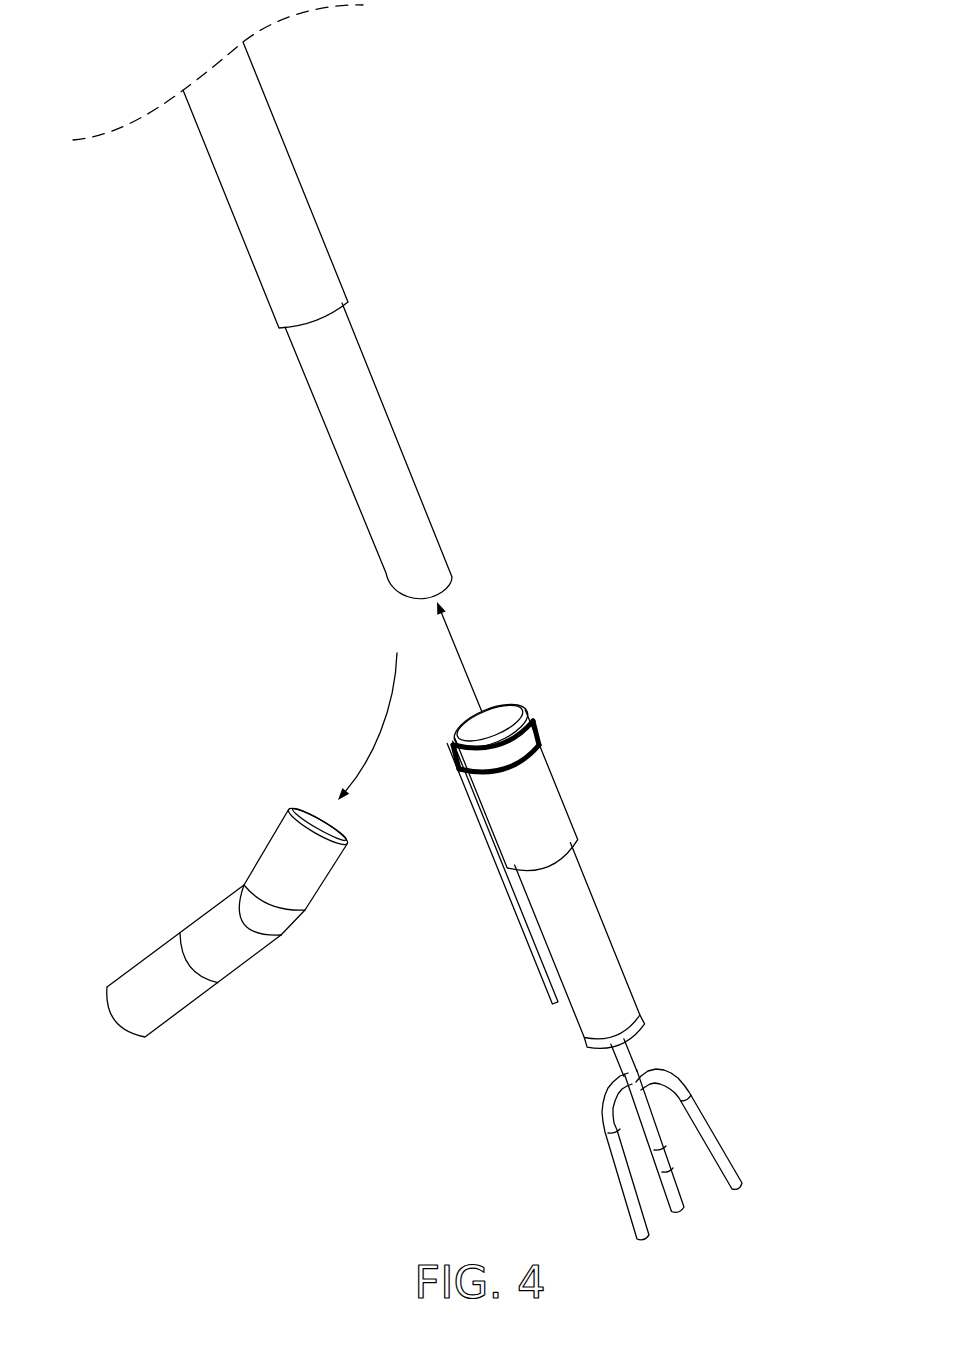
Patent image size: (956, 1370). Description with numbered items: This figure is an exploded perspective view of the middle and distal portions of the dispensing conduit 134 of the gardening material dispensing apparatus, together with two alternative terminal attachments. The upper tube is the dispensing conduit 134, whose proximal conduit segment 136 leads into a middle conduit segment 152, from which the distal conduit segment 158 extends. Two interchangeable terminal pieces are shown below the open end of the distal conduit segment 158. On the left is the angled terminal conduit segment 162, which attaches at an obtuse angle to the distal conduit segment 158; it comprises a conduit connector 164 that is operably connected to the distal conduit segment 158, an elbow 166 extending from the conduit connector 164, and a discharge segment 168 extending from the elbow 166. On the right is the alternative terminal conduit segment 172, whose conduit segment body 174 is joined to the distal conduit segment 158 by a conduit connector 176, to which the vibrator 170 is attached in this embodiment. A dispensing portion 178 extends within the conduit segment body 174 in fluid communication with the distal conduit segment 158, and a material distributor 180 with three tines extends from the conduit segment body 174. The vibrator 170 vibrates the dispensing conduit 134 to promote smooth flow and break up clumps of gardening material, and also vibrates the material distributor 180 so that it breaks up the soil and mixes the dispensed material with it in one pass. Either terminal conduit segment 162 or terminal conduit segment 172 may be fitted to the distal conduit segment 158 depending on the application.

The dispensing conduit 134 is at (433, 341).
The proximal conduit segment 136 is at (282, 131).
The middle conduit segment 152 is at (252, 205).
The distal conduit segment 158 is at (388, 517).
The terminal conduit segment 162 is at (259, 964).
The conduit connector 164 is at (280, 857).
The elbow 166 is at (273, 922).
The discharge segment 168 is at (157, 1003).
The vibrator 170 is at (524, 741).
The terminal conduit segment 172 is at (637, 990).
The conduit segment body 174 is at (568, 887).
The conduit connector 176 is at (530, 785).
The dispensing portion 178 is at (550, 977).
The material distributor 180 is at (709, 1123).